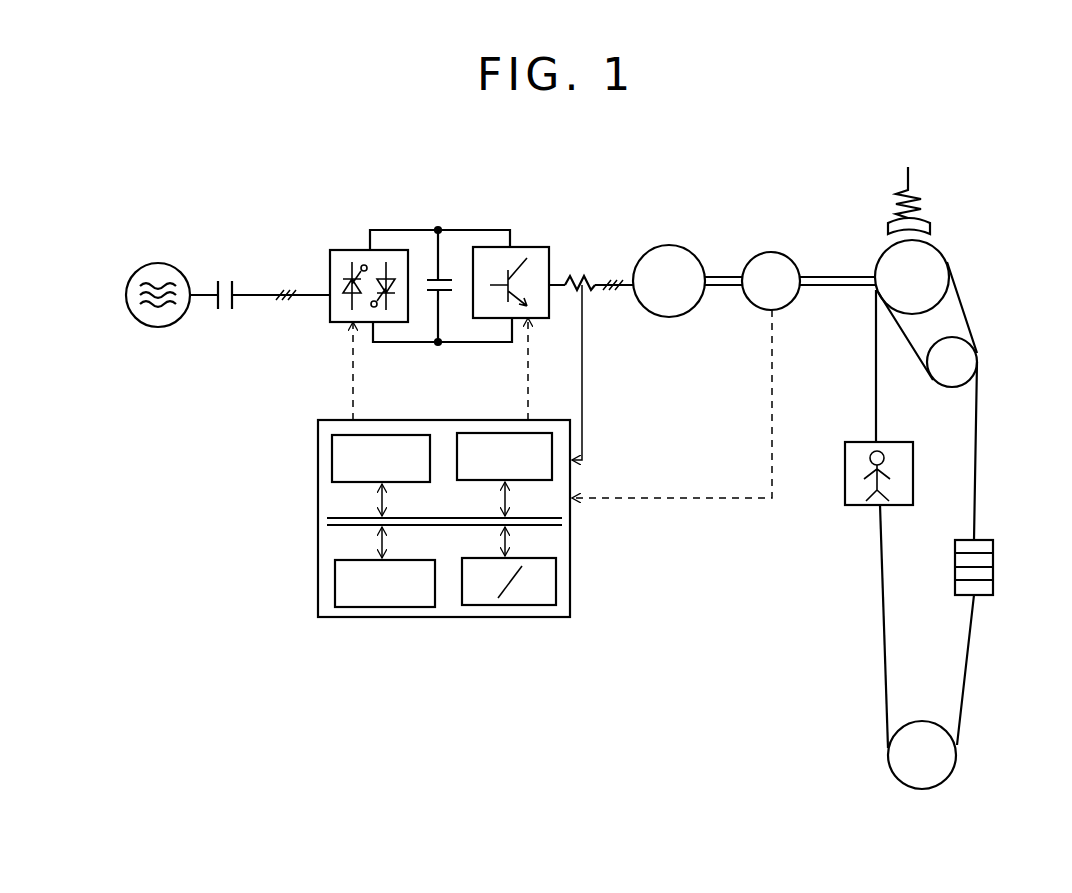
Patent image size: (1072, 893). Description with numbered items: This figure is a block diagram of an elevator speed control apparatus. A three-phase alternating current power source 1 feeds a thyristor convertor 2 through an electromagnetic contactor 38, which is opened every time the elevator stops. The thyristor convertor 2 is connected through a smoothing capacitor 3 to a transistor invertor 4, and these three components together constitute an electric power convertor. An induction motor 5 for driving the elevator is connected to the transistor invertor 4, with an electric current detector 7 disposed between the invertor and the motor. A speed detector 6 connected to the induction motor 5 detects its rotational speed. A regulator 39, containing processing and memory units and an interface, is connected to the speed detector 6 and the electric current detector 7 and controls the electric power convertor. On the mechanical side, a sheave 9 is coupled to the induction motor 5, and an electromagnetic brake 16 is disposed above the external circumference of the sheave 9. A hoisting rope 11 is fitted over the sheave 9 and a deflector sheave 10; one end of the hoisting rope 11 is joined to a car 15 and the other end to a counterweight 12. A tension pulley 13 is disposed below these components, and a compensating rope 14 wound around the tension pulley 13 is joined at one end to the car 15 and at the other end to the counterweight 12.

The three-phase alternating current power source 1 is at (162, 263).
The electromagnetic contactor 38 is at (227, 280).
The thyristor convertor 2 is at (342, 250).
The smoothing capacitor 3 is at (447, 273).
The transistor invertor 4 is at (535, 247).
The electric current detector 7 is at (585, 241).
The induction motor 5 is at (672, 245).
The speed detector 6 is at (785, 252).
The electromagnetic brake 16 is at (925, 204).
The sheave 9 is at (945, 258).
The deflector sheave 10 is at (977, 362).
The hoisting rope 11 is at (877, 413).
The car 15 is at (913, 463).
The compensating rope 14 is at (888, 652).
The counterweight 12 is at (993, 567).
The tension pulley 13 is at (942, 772).
The regulator 39 is at (447, 618).